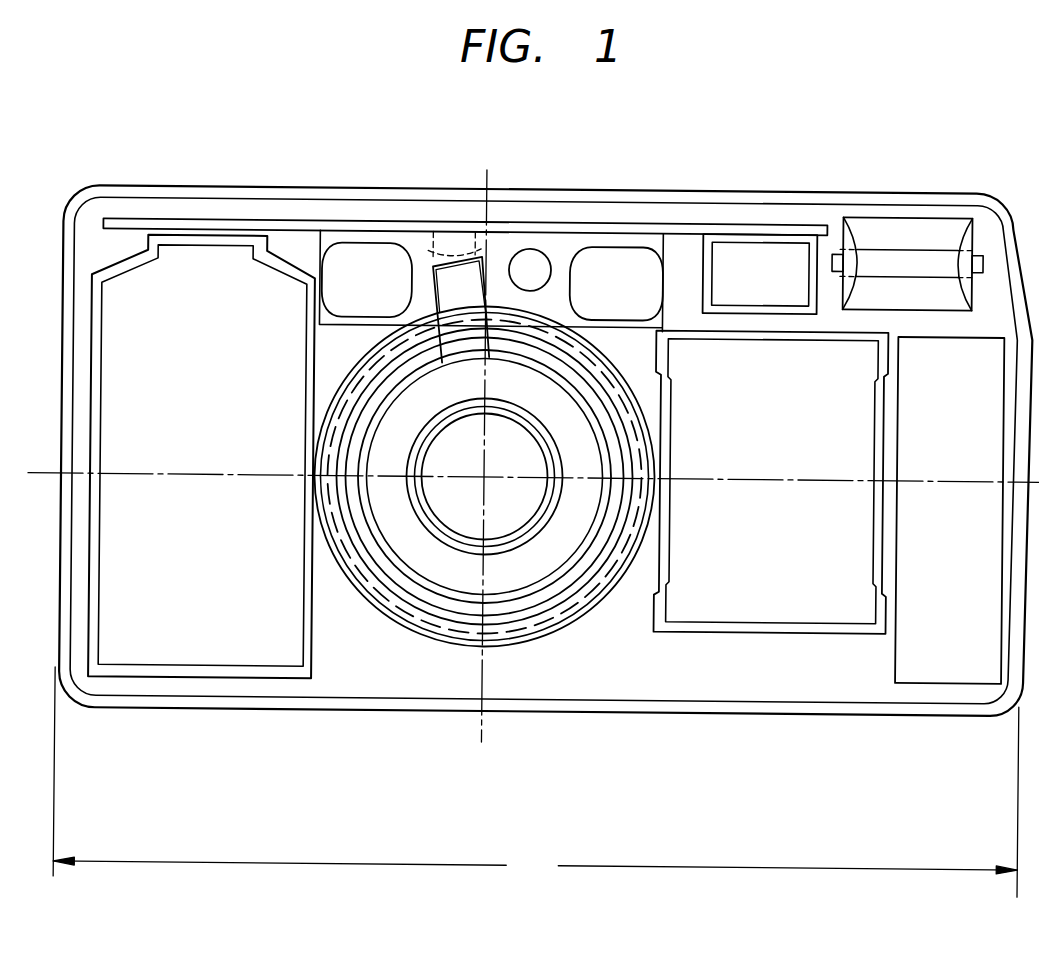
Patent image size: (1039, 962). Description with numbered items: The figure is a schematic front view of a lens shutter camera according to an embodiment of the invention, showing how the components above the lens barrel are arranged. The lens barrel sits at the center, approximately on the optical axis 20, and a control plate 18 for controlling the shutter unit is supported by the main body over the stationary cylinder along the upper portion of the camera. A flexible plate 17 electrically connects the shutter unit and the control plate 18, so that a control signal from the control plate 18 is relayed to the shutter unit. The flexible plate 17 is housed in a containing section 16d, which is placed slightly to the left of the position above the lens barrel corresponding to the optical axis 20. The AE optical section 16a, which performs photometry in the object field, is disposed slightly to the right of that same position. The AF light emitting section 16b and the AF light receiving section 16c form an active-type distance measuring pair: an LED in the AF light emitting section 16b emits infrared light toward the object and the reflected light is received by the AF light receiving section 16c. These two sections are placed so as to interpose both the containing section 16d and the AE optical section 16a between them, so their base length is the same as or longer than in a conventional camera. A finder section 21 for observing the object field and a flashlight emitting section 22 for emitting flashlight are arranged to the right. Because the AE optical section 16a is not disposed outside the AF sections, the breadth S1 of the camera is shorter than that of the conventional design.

The AE optical section 16a is at (527, 252).
The AF light emitting section 16b is at (355, 263).
The AF light receiving section 16c is at (605, 258).
The containing section 16d is at (451, 247).
The flexible plate 17 is at (448, 288).
The control plate 18 is at (203, 222).
The optical axis 20 is at (485, 477).
The finder section 21 is at (757, 252).
The flashlight emitting section 22 is at (901, 255).
The breadth of the camera S1 is at (536, 782).